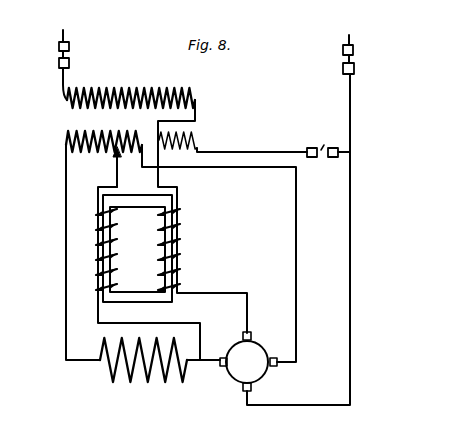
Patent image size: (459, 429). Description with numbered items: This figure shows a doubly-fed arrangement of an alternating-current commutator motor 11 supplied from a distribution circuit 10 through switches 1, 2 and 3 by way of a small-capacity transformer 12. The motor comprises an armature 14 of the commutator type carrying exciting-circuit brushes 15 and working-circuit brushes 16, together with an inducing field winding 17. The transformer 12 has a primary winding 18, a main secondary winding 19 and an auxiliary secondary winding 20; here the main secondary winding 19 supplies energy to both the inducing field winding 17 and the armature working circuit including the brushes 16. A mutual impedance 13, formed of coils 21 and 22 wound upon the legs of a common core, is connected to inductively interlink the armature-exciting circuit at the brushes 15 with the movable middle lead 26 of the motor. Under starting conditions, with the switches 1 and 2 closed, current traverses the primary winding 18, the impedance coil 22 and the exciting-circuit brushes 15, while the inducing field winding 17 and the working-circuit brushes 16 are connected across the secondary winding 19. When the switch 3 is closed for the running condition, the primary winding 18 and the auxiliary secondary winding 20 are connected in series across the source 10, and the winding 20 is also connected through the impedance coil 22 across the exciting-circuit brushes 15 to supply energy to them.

The switch 1 is at (58, 55).
The switch 2 is at (355, 60).
The switch 3 is at (322, 144).
The distribution circuit 10 is at (63, 35).
The alternating-current commutator motor 11 is at (250, 359).
The transformer 12 is at (115, 111).
The mutual impedance 13 is at (147, 259).
The armature 14 is at (247, 362).
The exciting-circuit brushes 15 is at (243, 335).
The working-circuit brushes 16 is at (222, 358).
The inducing field winding 17 is at (173, 356).
The primary winding 18 is at (96, 92).
The main secondary winding 19 is at (92, 134).
The auxiliary secondary winding 20 is at (198, 136).
The coil 21 is at (97, 241).
The coil 22 is at (174, 257).
The movable middle lead 26 is at (116, 167).